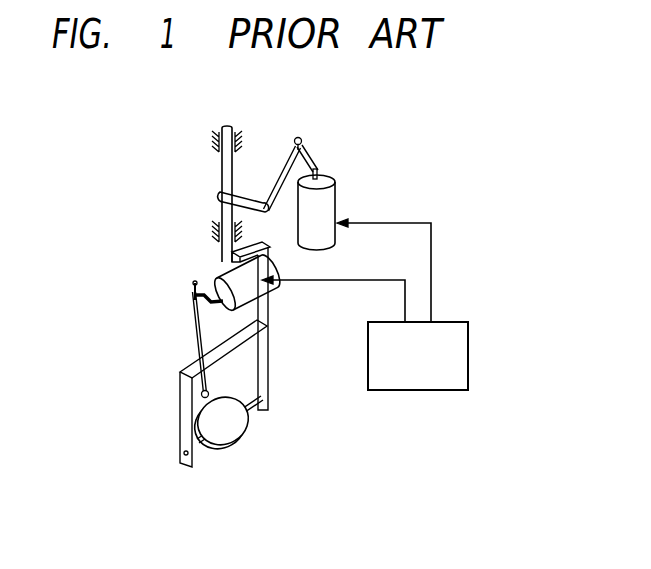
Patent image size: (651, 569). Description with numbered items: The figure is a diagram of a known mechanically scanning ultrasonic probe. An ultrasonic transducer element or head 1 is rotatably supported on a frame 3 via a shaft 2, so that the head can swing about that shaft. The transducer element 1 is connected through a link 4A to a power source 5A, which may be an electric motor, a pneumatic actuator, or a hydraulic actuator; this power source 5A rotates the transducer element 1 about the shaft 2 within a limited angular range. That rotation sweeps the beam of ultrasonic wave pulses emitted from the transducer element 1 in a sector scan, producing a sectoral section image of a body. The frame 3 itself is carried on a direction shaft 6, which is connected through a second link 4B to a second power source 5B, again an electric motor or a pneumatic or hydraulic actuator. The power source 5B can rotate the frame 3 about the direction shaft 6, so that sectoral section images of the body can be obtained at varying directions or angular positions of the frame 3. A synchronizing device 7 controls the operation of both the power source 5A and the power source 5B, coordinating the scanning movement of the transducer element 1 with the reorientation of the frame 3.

The ultrasonic transducer element 1 is at (243, 444).
The shaft 2 is at (200, 447).
The frame 3 is at (190, 408).
The link 4A is at (197, 327).
The link 4B is at (290, 164).
The power source 5A is at (222, 276).
The power source 5B is at (337, 197).
The direction shaft 6 is at (225, 182).
The synchronizing device 7 is at (470, 344).